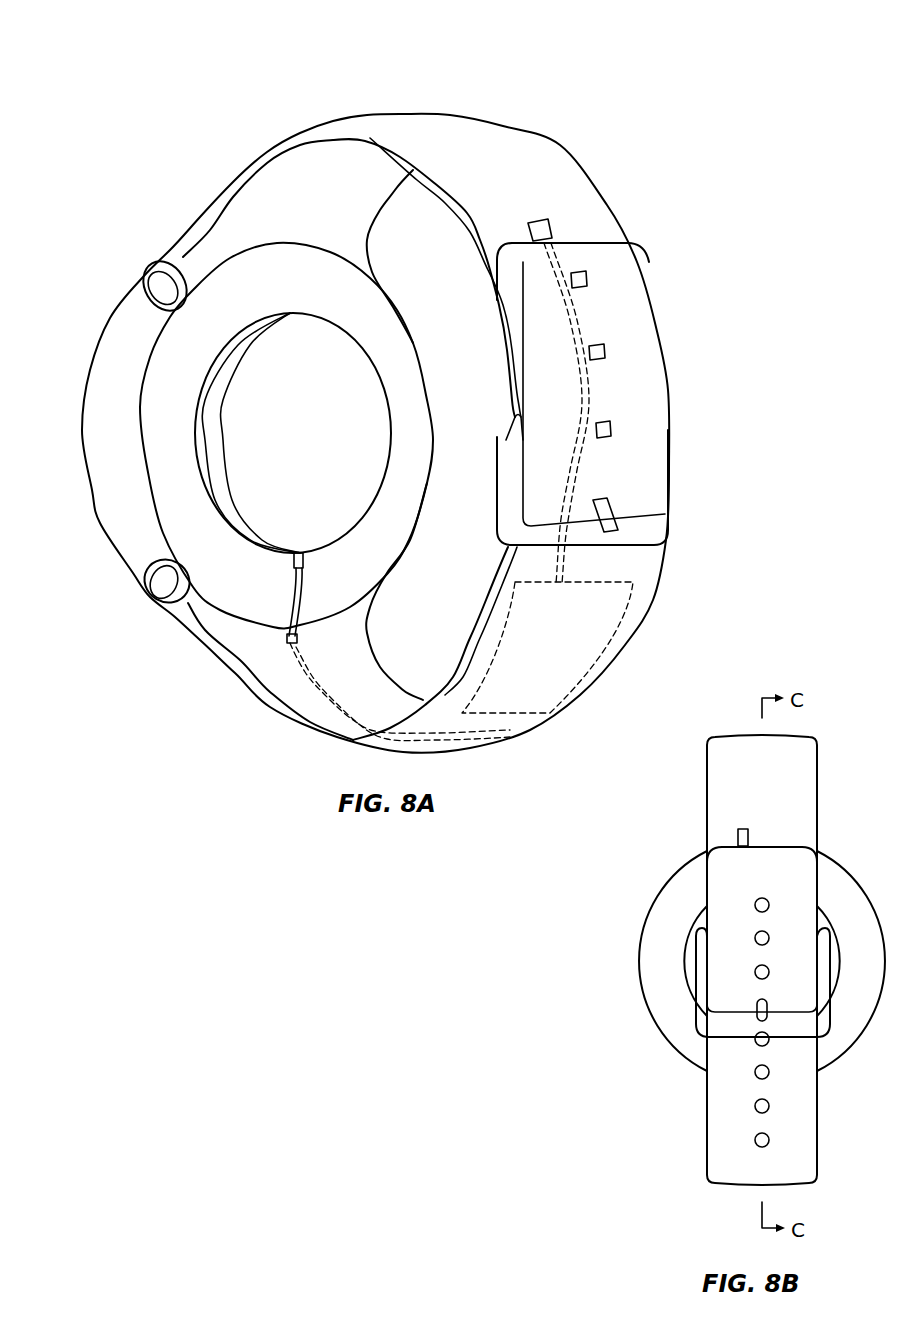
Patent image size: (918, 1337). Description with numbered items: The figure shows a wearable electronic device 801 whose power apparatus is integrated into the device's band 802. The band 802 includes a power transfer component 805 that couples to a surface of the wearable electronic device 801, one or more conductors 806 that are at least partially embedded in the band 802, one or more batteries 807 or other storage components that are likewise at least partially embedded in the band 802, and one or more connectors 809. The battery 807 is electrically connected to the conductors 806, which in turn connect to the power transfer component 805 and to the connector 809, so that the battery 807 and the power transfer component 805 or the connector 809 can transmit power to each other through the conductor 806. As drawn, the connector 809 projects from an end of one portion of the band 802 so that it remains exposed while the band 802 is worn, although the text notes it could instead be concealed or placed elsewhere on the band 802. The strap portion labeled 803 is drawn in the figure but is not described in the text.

In FIG. 8A, the wearable electronic device 801 is at (82, 428).
In FIG. 8B, the wearable electronic device 801 is at (640, 967).
In FIG. 8A, the band 802 is at (355, 101).
In FIG. 8A, the strap 803 is at (440, 600).
In FIG. 8A, the power transfer component 805 is at (390, 430).
In FIG. 8A, the conductors 806 is at (302, 580).
In FIG. 8A, the battery 807 is at (633, 601).
In FIG. 8A, the connector 809 is at (539, 226).
In FIG. 8B, the connector 809 is at (738, 836).